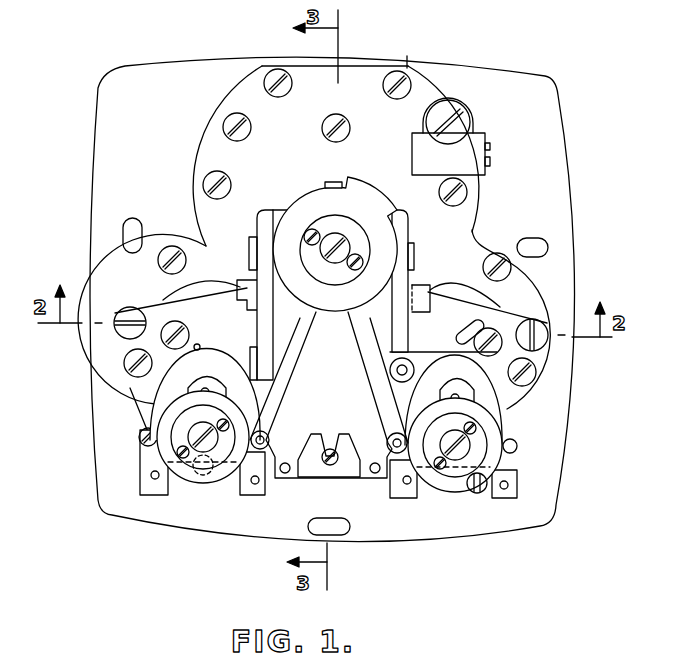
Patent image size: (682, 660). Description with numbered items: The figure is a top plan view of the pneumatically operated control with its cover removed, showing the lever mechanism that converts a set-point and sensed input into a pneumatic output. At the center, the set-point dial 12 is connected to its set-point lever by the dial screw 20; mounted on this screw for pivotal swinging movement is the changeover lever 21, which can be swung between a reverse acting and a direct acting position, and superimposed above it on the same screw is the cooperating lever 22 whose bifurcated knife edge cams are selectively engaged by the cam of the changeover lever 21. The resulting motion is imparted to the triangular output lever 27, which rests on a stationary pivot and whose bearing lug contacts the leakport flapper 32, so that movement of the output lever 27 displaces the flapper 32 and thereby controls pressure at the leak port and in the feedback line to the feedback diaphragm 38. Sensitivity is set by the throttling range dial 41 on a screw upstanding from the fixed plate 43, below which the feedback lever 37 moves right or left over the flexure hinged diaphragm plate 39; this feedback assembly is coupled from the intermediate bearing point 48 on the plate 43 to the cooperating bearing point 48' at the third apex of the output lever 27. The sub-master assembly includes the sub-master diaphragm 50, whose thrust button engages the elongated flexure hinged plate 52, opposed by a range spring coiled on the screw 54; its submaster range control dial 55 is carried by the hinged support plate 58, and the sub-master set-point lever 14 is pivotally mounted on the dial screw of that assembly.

The set-point dial 12 is at (318, 192).
The lever of sub-master control means 14 is at (458, 344).
The dial screw 20 is at (326, 240).
The changeover lever 21 is at (329, 181).
The reverse acting and direct acting cooperating lever 22 is at (350, 329).
The triangular output lever 27 is at (270, 416).
The leakport flapper 32 is at (308, 387).
The feedback lever 37 is at (200, 344).
The feedback diaphragm 38 is at (211, 288).
The flexure hinged diaphragm plate 39 is at (157, 308).
The throttling range dial 41 is at (203, 474).
The fixed plate 43 is at (181, 370).
The intermediate bearing point 48 is at (329, 455).
The cooperating bearing point 48' is at (278, 436).
The sub-master diaphragm 50 is at (471, 292).
The elongated flexure hinged plate 52 is at (498, 318).
The screw 54 is at (482, 350).
The submaster range control dial 55 is at (508, 452).
The hinged support plate 58 is at (500, 418).